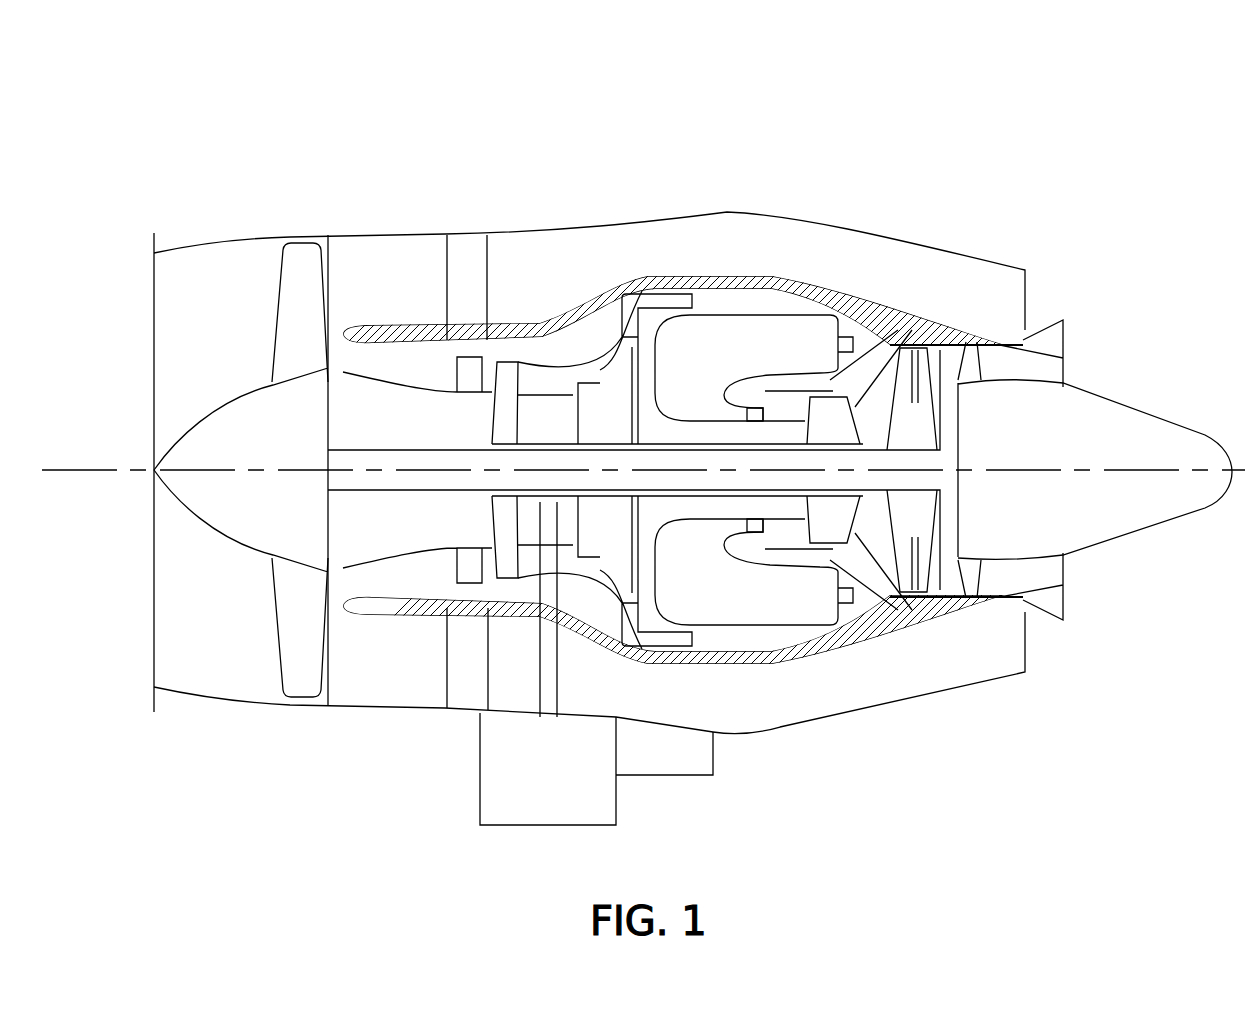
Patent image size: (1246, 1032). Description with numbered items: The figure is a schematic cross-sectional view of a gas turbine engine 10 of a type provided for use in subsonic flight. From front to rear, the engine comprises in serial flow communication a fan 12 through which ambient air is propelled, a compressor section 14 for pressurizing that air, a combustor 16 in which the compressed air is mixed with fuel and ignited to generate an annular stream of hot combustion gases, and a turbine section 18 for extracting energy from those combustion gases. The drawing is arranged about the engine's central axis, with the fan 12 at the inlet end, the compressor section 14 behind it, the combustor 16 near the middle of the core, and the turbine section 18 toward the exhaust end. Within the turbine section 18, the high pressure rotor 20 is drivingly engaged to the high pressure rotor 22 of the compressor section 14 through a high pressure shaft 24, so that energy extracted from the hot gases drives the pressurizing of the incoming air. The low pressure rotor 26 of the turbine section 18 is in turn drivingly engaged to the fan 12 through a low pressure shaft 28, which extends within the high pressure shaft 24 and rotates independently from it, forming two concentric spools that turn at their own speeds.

The gas turbine engine 10 is at (893, 148).
The fan 12 is at (297, 619).
The compressor section 14 is at (542, 377).
The combustor 16 is at (747, 335).
The turbine section 18 is at (874, 530).
The high pressure rotor 20 is at (832, 388).
The high pressure rotor 22 is at (608, 402).
The high pressure shaft 24 is at (752, 410).
The low pressure rotor 26 is at (857, 405).
The low pressure shaft 28 is at (383, 495).